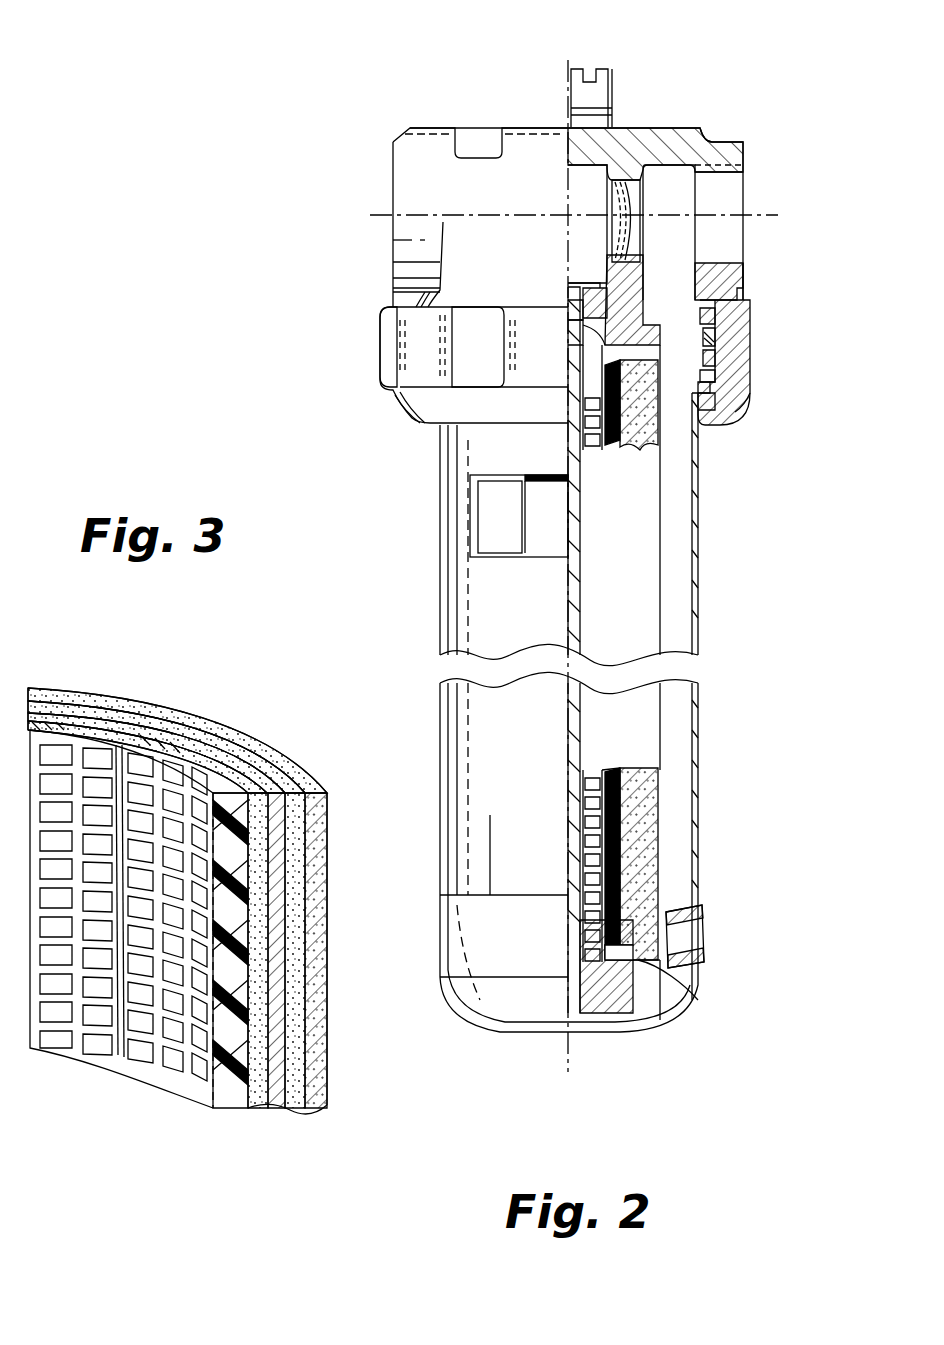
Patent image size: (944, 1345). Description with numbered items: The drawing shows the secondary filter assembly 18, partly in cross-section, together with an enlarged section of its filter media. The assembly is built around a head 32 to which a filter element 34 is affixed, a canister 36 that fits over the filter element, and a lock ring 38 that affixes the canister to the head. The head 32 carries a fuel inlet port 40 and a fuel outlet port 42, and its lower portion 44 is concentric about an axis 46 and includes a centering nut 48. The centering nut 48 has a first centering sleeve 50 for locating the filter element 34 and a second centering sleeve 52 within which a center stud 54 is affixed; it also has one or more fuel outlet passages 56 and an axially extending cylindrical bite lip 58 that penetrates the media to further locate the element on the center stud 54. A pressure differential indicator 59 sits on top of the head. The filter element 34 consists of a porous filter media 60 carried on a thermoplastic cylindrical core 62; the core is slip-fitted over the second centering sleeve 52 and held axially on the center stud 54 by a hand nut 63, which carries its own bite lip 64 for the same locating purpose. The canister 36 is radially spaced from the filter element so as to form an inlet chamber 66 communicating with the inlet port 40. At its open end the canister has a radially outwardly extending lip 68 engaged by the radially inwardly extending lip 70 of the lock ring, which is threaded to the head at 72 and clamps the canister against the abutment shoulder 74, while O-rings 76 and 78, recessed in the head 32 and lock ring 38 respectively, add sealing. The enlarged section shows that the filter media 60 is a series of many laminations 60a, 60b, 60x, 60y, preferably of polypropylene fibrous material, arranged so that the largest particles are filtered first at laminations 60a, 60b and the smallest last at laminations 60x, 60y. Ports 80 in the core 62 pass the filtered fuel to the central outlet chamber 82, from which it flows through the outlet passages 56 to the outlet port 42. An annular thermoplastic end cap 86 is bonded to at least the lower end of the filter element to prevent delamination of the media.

In FIG. 2, the secondary filter assembly 18 is at (700, 582).
In FIG. 2, the head 32 is at (705, 148).
In FIG. 2, the filter element 34 is at (660, 840).
In FIG. 3, the filter element 34 is at (108, 688).
In FIG. 2, the canister 36 is at (698, 717).
In FIG. 2, the lock ring 38 is at (740, 312).
In FIG. 2, the fuel inlet port 40 is at (725, 192).
In FIG. 2, the fuel outlet port 42 is at (575, 182).
In FIG. 2, the lower portion of the head 44 is at (725, 292).
In FIG. 2, the axis 46 is at (568, 62).
In FIG. 2, the centering nut 48 is at (655, 312).
In FIG. 2, the first centering sleeve 50 is at (572, 330).
In FIG. 2, the second centering sleeve 52 is at (600, 345).
In FIG. 2, the center stud 54 is at (578, 517).
In FIG. 2, the fuel outlet passage 56 is at (588, 300).
In FIG. 2, the bite lip 58 is at (607, 362).
In FIG. 2, the pressure differential indicator 59 is at (598, 108).
In FIG. 2, the porous filter media 60 is at (658, 794).
In FIG. 3, the porous filter media 60 is at (322, 808).
In FIG. 3, the lamination 60a is at (292, 774).
In FIG. 3, the lamination 60b is at (257, 762).
In FIG. 3, the lamination 60x is at (210, 742).
In FIG. 3, the lamination 60y is at (165, 738).
In FIG. 2, the thermoplastic cylindrical core 62 is at (612, 771).
In FIG. 3, the thermoplastic cylindrical core 62 is at (80, 1046).
In FIG. 2, the hand nut 63 is at (626, 1014).
In FIG. 2, the bite lip 64 is at (618, 1003).
In FIG. 2, the inlet chamber 66 is at (680, 528).
In FIG. 2, the radially outwardly extending lip 68 is at (718, 397).
In FIG. 2, the radially inwardly extending lip 70 is at (716, 414).
In FIG. 2, the threaded connection 72 is at (722, 316).
In FIG. 2, the abutment shoulder 74 is at (716, 374).
In FIG. 2, the O-ring 76 is at (720, 336).
In FIG. 2, the O-ring 78 is at (718, 354).
In FIG. 3, the ports 80 is at (58, 1040).
In FIG. 2, the central outlet chamber 82 is at (586, 798).
In FIG. 2, the annular thermoplastic end cap 86 is at (652, 962).